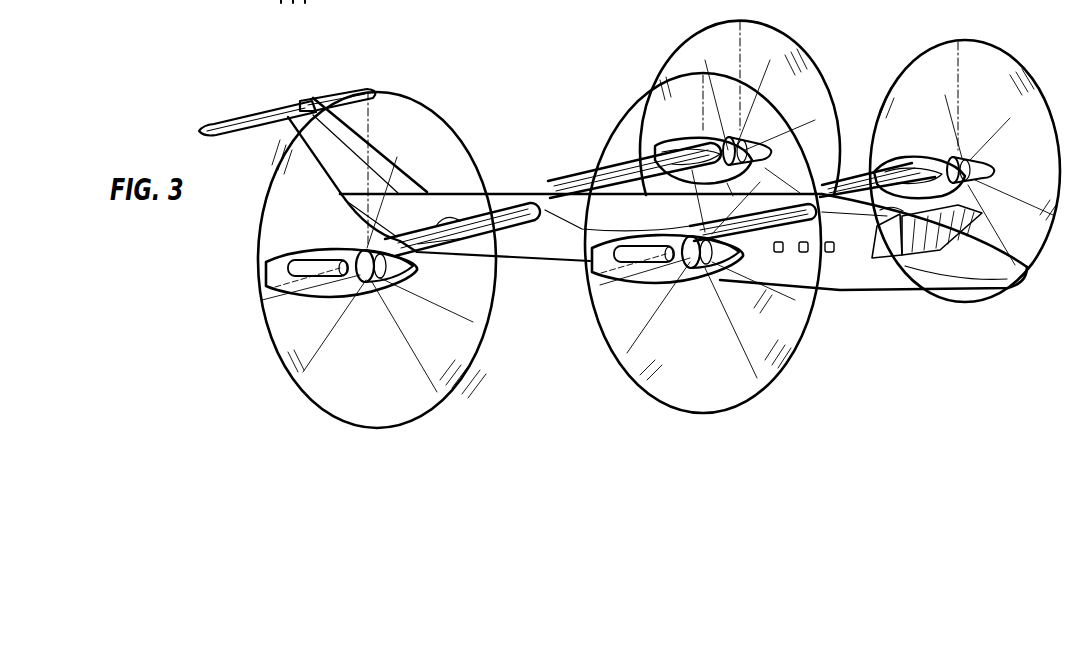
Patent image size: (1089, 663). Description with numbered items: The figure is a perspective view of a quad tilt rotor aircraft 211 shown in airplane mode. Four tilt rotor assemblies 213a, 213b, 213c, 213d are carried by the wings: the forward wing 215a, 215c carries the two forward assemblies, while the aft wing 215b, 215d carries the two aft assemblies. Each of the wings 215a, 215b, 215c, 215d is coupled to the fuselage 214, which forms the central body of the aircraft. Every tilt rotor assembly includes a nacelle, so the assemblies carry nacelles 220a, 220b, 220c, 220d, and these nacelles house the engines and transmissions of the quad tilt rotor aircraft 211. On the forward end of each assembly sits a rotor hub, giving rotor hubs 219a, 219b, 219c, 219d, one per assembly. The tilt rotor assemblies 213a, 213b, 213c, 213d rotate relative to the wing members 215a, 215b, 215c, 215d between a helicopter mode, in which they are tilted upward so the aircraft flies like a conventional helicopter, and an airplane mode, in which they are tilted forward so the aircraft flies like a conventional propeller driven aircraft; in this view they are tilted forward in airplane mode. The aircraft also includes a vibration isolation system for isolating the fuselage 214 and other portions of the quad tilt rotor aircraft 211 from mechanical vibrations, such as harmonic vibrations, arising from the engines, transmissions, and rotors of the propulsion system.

The quad tilt rotor aircraft 211 is at (576, 70).
The tilt rotor assembly 213a is at (961, 128).
The tilt rotor assembly 213b is at (720, 125).
The tilt rotor assembly 213c is at (661, 293).
The tilt rotor assembly 213d is at (236, 290).
The fuselage 214 is at (887, 280).
The forward wing 215a is at (848, 188).
The aft wing 215b is at (578, 183).
The forward wing 215c is at (690, 224).
The aft wing 215d is at (503, 200).
The rotor hub 219a is at (978, 163).
The rotor hub 219b is at (762, 144).
The rotor hub 219c is at (717, 262).
The rotor hub 219d is at (388, 278).
The nacelle 220a is at (920, 157).
The nacelle 220b is at (652, 149).
The nacelle 220c is at (642, 271).
The nacelle 220d is at (317, 291).